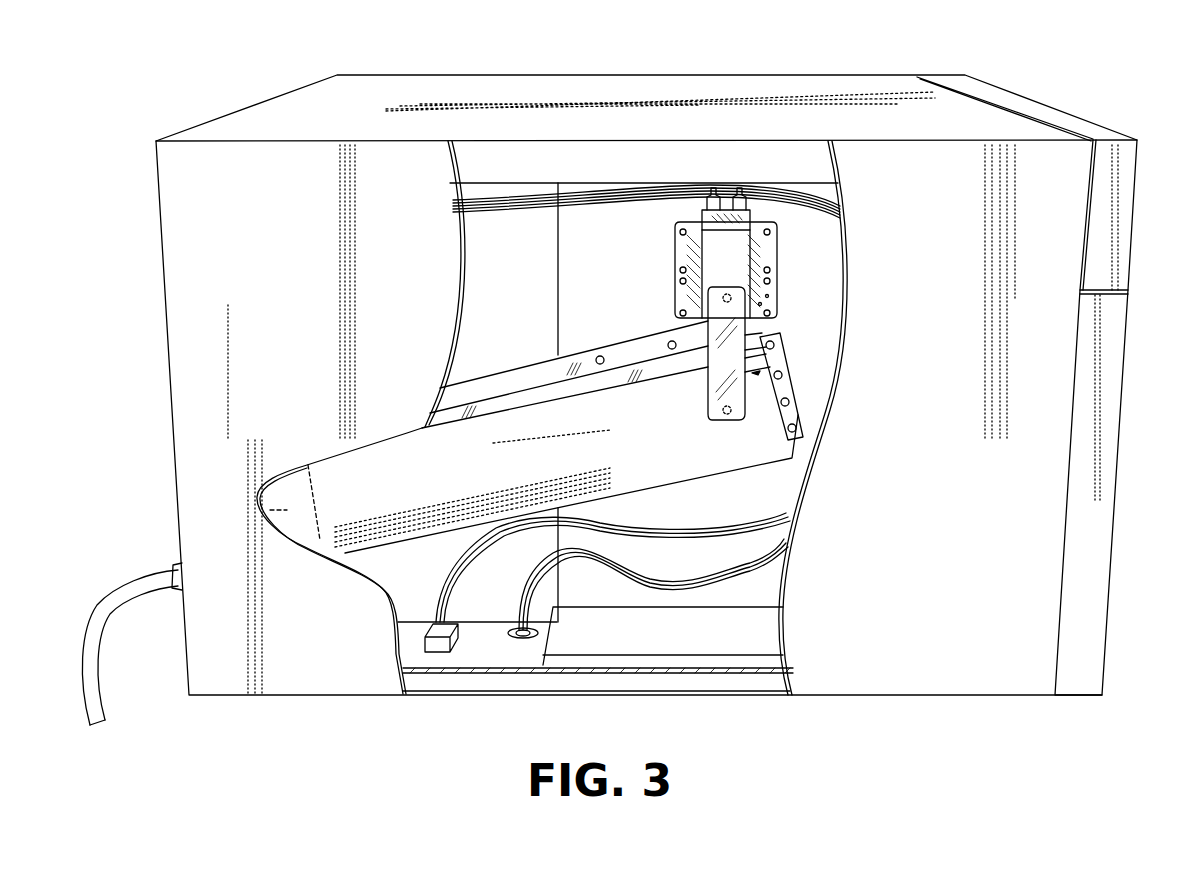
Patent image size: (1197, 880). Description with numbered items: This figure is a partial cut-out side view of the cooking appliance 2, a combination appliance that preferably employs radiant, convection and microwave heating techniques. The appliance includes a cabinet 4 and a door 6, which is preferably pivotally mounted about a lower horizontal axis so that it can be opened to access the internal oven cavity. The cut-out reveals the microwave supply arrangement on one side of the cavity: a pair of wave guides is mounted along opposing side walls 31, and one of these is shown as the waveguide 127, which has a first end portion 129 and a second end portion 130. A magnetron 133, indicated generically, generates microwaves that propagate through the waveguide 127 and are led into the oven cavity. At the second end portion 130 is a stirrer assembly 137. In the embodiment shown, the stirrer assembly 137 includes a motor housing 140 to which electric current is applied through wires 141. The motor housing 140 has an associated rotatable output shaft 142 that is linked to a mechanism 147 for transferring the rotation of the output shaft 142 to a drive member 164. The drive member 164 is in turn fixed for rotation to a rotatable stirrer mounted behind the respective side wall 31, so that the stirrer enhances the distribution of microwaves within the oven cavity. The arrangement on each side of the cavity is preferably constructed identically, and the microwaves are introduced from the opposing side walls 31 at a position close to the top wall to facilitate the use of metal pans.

The cooking appliance 2 is at (1093, 72).
The cabinet 4 is at (806, 82).
The door 6 is at (1117, 476).
The side wall 31 is at (830, 327).
The waveguide 127 is at (476, 428).
The first end portion 129 is at (350, 549).
The second end portion 130 is at (775, 405).
The magnetron 133 is at (236, 502).
The stirrer assembly 137 is at (798, 312).
The motor housing 140 is at (682, 249).
The wires 141 is at (712, 188).
The output shaft 142 is at (771, 280).
The mechanism 147 is at (778, 348).
The drive member 164 is at (723, 420).